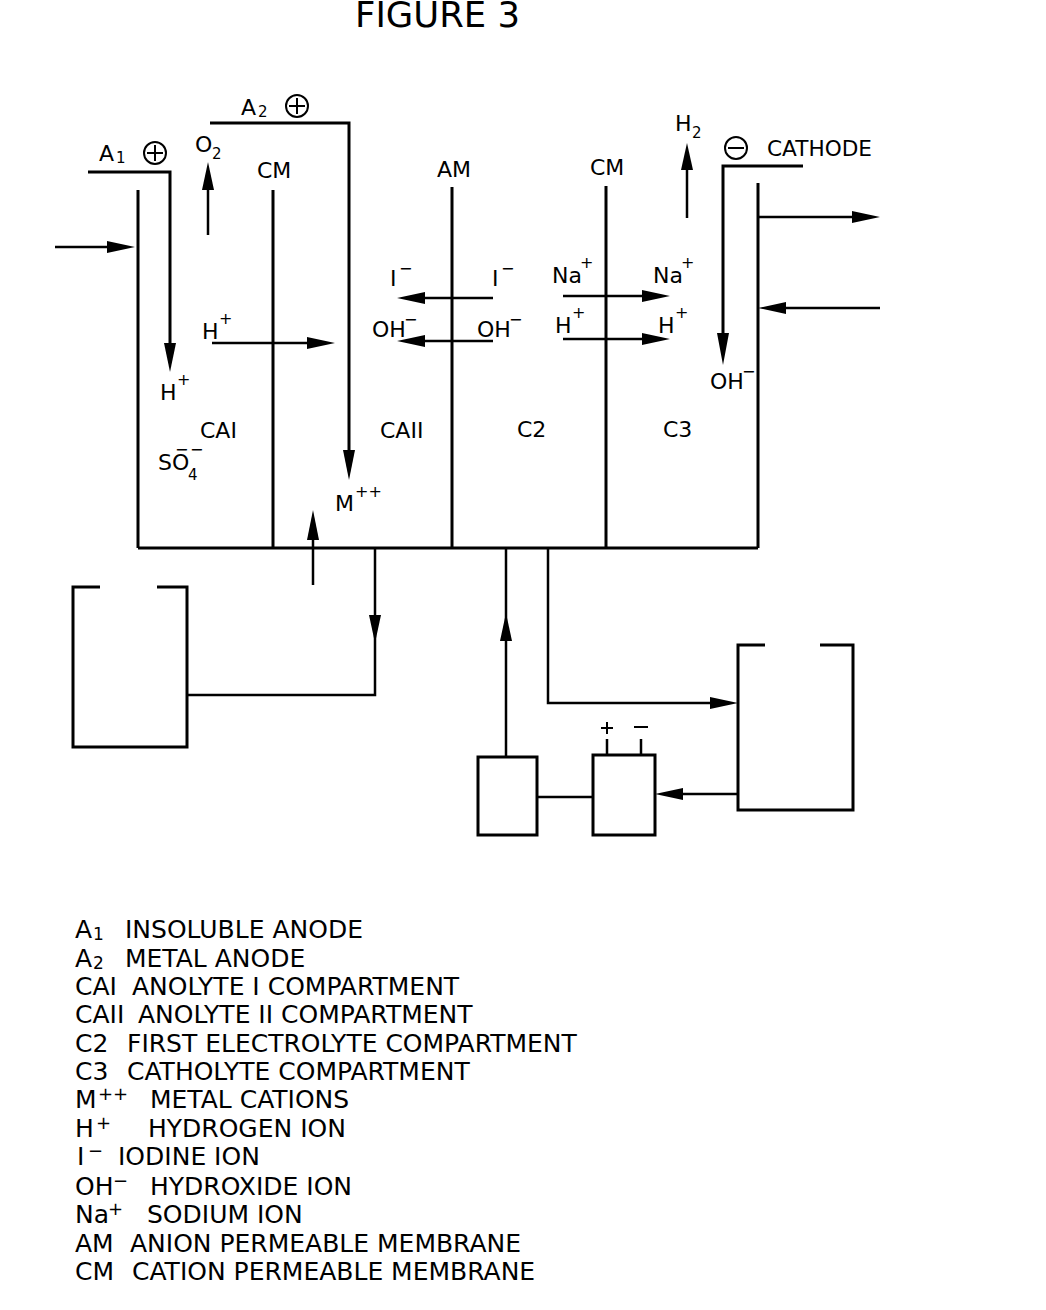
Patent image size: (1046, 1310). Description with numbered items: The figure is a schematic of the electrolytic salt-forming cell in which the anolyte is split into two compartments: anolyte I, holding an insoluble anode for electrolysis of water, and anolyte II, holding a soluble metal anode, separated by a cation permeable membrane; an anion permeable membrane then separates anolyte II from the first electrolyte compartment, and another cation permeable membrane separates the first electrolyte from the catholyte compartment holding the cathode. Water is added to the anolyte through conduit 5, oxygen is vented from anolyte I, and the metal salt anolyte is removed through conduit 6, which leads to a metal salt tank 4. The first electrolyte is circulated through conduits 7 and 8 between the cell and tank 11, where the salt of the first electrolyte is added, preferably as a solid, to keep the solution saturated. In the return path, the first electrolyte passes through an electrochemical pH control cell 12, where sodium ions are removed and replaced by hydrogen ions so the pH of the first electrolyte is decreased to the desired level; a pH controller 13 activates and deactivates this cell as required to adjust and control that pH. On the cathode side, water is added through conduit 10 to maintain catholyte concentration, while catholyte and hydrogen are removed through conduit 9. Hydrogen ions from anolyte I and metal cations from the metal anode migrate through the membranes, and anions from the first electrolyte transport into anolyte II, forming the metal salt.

The tank 4 is at (130, 697).
The conduit 5 is at (205, 414).
The conduit 6 is at (284, 639).
The conduit 7 is at (643, 628).
The conduit 8 is at (696, 783).
The conduit 9 is at (825, 222).
The conduit 10 is at (819, 311).
The tank 11 is at (795, 713).
The pH control cell 12 is at (634, 794).
The pH controller 13 is at (483, 710).